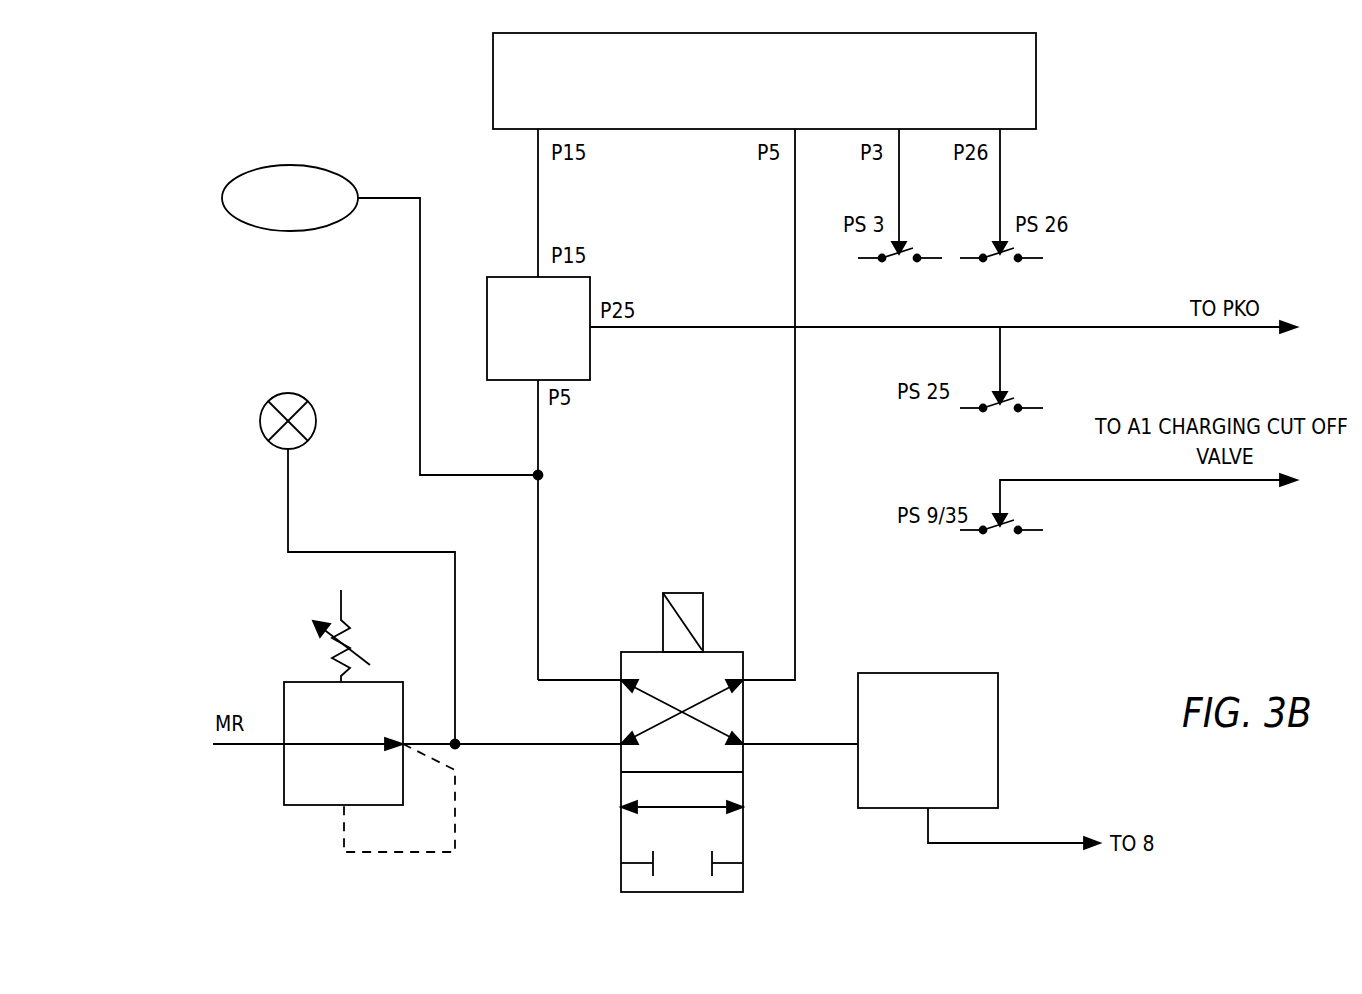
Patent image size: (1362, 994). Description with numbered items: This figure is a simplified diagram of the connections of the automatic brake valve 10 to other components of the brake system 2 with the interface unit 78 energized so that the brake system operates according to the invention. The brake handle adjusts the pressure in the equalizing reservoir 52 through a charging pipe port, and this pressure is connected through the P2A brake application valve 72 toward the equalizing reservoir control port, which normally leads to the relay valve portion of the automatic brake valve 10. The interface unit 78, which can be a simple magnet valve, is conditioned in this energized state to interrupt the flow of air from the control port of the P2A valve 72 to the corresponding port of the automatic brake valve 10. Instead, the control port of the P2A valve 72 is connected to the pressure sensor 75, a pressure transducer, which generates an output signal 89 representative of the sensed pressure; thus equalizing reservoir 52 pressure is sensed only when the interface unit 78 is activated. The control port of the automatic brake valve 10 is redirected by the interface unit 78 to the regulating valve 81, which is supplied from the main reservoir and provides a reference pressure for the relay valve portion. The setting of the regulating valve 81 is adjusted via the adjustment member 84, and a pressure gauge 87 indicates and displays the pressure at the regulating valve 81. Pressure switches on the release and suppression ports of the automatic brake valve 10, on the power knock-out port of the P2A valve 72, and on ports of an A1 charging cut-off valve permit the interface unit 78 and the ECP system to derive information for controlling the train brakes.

The automatic brake valve 10 is at (1048, 78).
The brake system 2 is at (1191, 183).
The equalizing reservoir 52 is at (295, 231).
The P2A brake application valve 72 is at (590, 357).
The pressure gauge 87 is at (300, 447).
The adjustment member 84 is at (336, 657).
The regulating valve 81 is at (305, 805).
The interface unit 78 is at (745, 882).
The pressure sensor 75 is at (998, 728).
The output signal 89 is at (1020, 843).